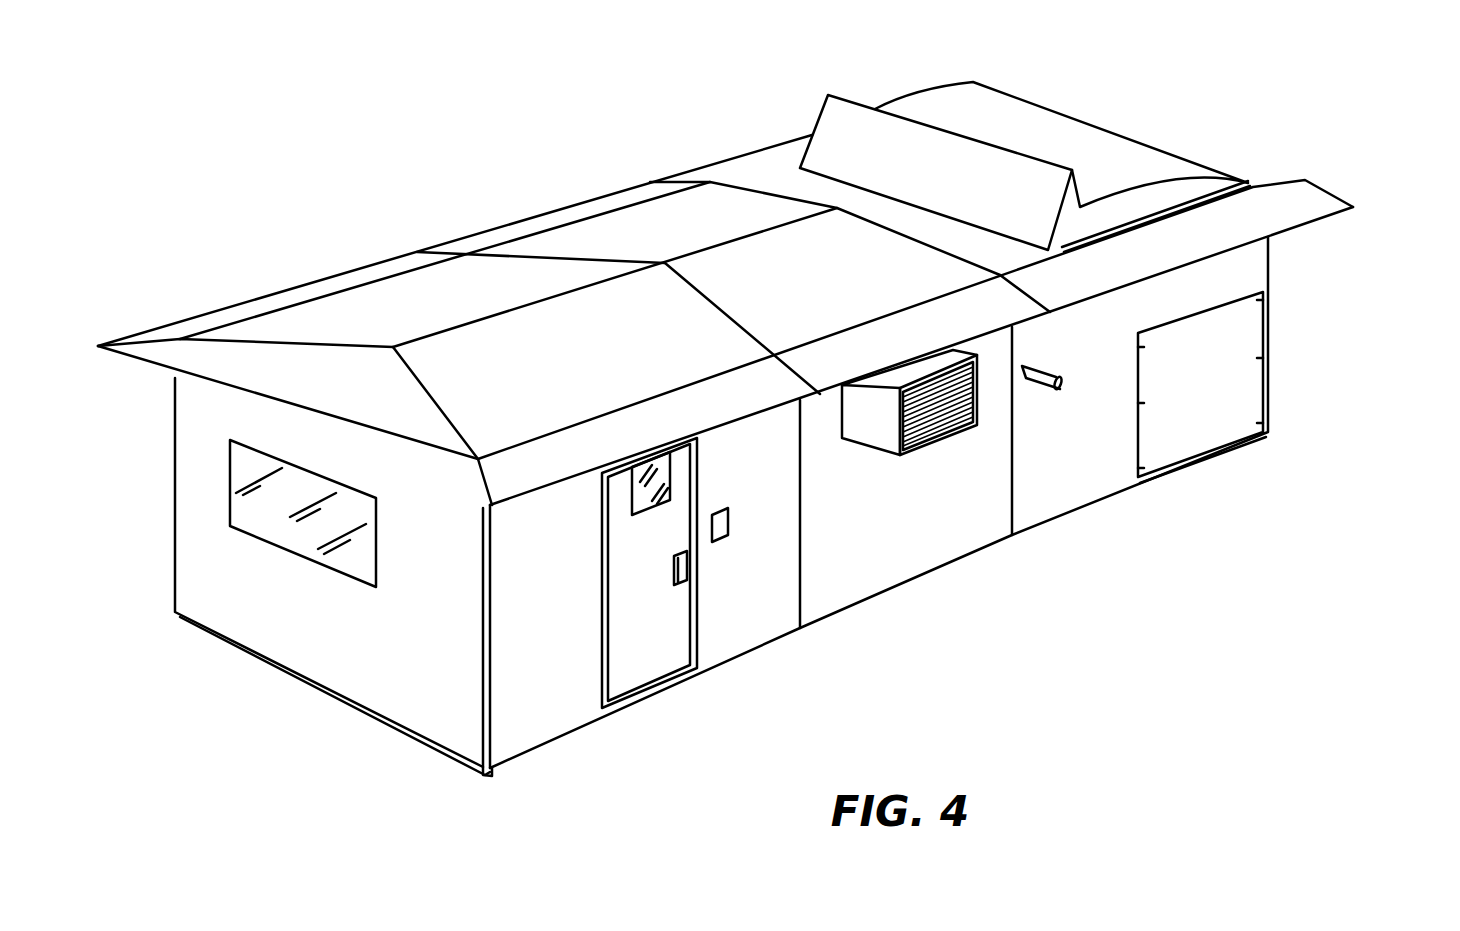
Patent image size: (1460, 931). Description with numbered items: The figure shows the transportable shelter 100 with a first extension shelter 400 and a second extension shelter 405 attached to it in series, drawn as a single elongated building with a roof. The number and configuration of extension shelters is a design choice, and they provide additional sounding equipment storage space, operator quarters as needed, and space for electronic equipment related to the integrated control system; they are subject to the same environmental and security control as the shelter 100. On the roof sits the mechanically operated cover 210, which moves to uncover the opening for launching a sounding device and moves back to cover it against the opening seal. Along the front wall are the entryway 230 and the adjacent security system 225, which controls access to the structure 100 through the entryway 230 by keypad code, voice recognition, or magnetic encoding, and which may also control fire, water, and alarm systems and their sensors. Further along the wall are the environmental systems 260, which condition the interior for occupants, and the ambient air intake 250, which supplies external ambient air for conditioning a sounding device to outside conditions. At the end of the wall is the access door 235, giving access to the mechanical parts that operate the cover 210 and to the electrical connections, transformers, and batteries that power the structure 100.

The shelter 100 is at (1270, 265).
The first extension shelter 400 is at (557, 208).
The second extension shelter 405 is at (303, 284).
The cover 210 is at (1088, 145).
The entryway 230 is at (637, 660).
The security system 225 is at (727, 530).
The environmental systems 260 is at (880, 432).
The ambient air intake 250 is at (1045, 390).
The access door 235 is at (1200, 428).